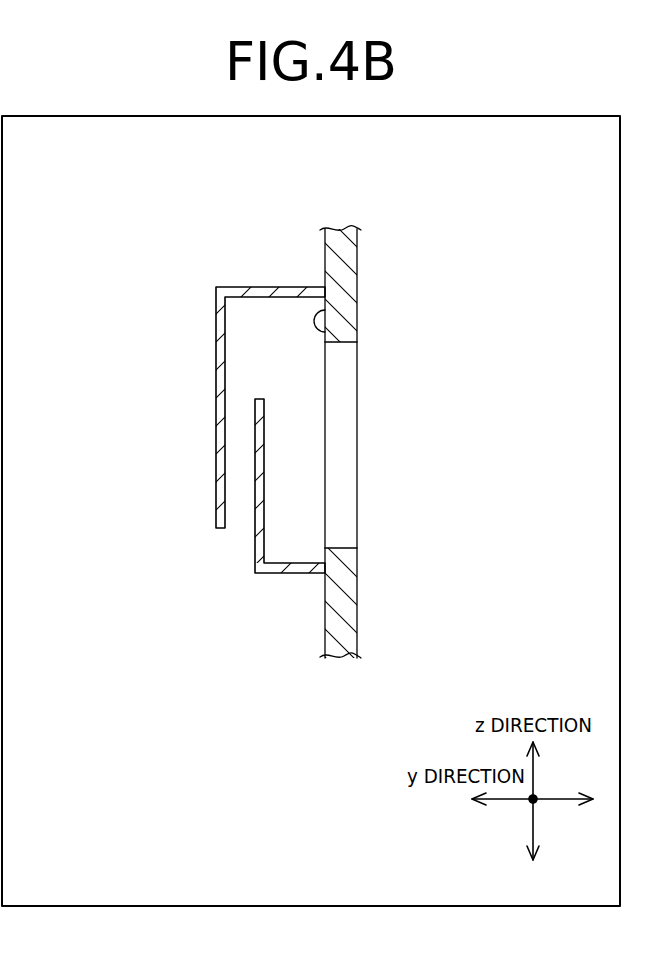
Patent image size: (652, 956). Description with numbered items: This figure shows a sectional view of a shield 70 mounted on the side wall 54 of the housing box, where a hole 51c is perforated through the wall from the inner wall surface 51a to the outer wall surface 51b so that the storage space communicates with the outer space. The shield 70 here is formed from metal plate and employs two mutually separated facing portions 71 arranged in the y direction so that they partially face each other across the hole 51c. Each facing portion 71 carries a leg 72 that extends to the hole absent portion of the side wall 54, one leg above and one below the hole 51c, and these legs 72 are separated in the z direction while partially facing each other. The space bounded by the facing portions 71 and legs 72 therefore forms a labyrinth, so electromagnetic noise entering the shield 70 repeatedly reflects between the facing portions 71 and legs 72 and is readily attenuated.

The shield 70 is at (258, 423).
The facing portion 71 is at (215, 344).
The leg 72 is at (279, 287).
The side wall 54 is at (357, 240).
The inner wall surface 51a is at (323, 333).
The outer wall surface 51b is at (357, 268).
The hole 51c is at (343, 546).